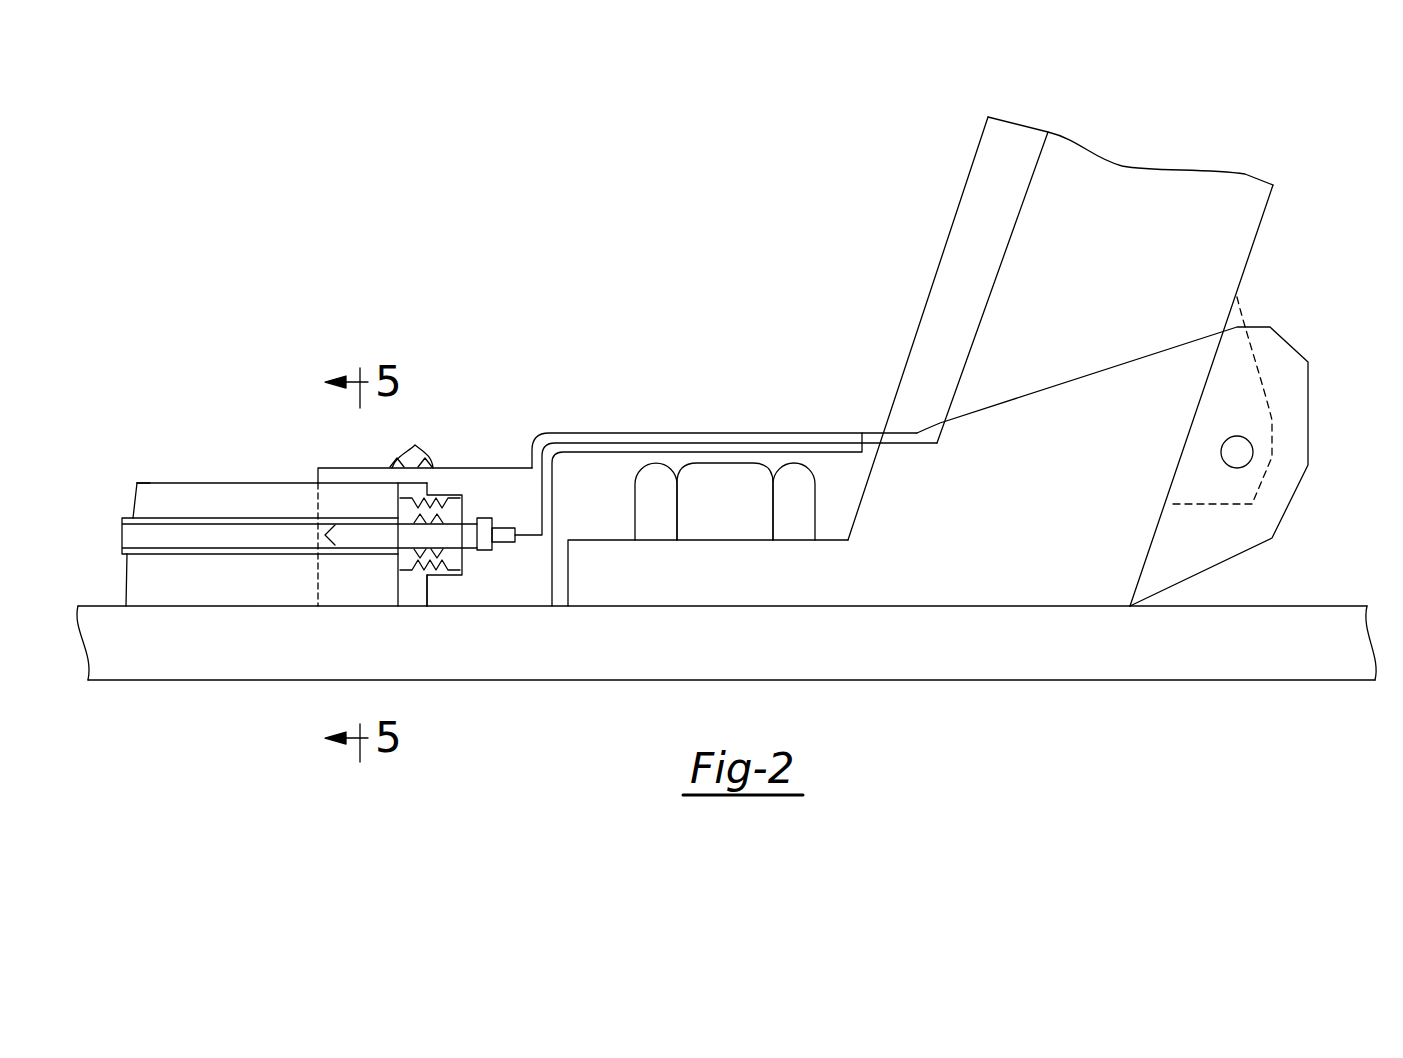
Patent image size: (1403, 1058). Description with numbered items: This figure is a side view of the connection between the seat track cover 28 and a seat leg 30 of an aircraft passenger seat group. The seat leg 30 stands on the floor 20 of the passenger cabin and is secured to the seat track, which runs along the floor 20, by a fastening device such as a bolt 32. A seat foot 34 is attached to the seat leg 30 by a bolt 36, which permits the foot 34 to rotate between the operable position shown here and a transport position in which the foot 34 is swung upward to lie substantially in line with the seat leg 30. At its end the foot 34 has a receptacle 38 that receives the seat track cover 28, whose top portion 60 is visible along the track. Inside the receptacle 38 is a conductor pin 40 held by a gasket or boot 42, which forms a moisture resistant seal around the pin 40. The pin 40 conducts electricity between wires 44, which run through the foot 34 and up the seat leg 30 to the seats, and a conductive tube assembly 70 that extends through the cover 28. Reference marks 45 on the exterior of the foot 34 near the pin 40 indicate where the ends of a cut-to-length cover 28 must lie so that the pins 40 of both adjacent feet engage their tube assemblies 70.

The floor 20 is at (1335, 615).
The seat track cover 28 is at (230, 482).
The seat leg 30 is at (1248, 220).
The bolt 32 is at (732, 475).
The seat foot 34 is at (623, 427).
The bolt 36 is at (1242, 455).
The receptacle 38 is at (427, 590).
The conductor pin 40 is at (357, 533).
The boot 42 is at (460, 505).
The wires 44 is at (1000, 273).
The reference marks 45 is at (415, 445).
The top portion 60 is at (167, 483).
The tube assembly 70 is at (122, 552).